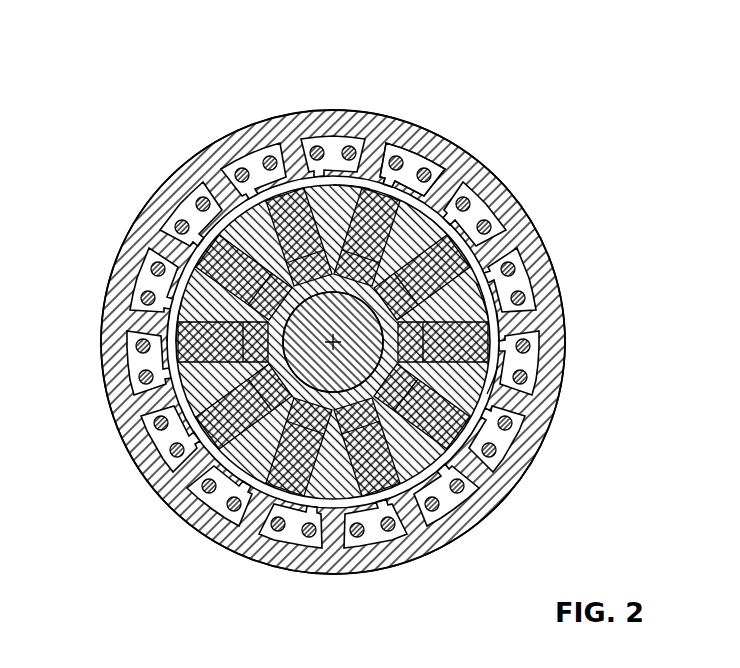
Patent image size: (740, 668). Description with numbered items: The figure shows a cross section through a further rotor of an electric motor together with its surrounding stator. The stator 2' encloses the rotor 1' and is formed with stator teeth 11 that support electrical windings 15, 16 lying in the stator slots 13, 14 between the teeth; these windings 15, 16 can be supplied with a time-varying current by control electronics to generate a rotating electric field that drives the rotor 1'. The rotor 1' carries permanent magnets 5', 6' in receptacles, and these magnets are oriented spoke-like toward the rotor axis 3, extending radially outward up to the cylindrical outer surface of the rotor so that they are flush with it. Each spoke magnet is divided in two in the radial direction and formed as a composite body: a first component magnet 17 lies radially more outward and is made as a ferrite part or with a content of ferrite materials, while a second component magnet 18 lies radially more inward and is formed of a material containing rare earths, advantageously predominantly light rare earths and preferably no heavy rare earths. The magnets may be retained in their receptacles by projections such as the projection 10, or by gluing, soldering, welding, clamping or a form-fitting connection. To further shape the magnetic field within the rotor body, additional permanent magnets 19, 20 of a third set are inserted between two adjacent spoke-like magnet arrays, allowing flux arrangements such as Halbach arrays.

The rotor 1' is at (333, 328).
The stator 2' is at (381, 342).
The rotor axis 3 is at (334, 346).
The permanent magnet 5' is at (324, 293).
The permanent magnet 6' is at (105, 288).
The projection 10 is at (446, 188).
The stator tooth 11 is at (518, 320).
The stator slot 13 is at (488, 220).
The stator slot 14 is at (528, 363).
The electrical winding 15 is at (468, 208).
The electrical winding 16 is at (528, 348).
The first component magnet 17 is at (262, 295).
The second component magnet 18 is at (220, 310).
The additional permanent magnet 19 is at (337, 205).
The additional permanent magnet 20 is at (456, 390).